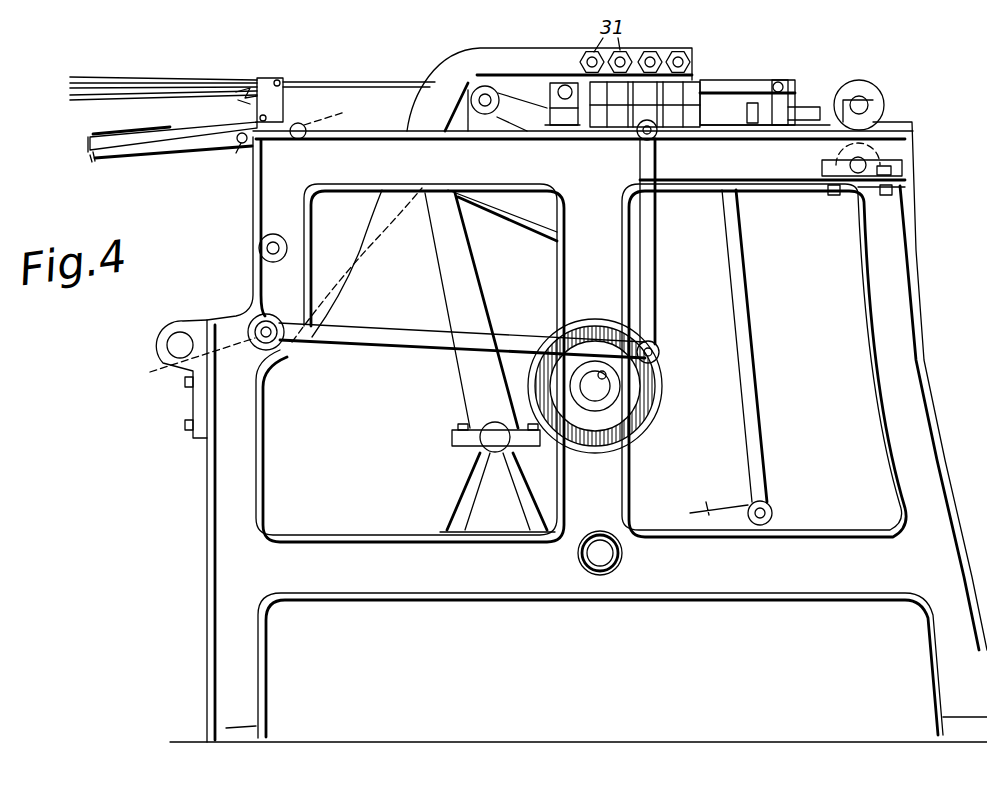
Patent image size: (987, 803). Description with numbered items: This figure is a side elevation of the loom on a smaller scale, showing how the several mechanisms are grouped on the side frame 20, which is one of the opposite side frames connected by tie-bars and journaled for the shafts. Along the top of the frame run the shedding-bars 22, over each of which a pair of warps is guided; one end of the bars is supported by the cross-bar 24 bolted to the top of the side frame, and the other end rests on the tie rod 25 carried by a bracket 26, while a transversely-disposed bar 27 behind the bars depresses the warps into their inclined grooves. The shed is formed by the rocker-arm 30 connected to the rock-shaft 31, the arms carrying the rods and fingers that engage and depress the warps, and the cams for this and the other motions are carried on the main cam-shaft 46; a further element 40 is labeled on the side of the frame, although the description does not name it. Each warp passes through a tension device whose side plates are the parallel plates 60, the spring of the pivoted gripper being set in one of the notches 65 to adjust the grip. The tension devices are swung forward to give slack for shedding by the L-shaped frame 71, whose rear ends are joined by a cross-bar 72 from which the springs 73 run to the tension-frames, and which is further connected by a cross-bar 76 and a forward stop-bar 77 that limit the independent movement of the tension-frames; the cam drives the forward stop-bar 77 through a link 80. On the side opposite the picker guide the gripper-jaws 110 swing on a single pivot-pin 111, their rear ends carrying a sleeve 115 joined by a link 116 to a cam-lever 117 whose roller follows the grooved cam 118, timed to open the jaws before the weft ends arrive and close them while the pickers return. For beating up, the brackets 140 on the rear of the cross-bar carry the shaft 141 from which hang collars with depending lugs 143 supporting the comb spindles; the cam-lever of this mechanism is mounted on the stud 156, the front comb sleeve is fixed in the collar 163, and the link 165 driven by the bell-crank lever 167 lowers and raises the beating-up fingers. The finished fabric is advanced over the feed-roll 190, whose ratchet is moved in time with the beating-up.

The side frame 20 is at (578, 395).
The shedding-bar 22 is at (745, 80).
The cross-bar 24 is at (563, 136).
The tie rod 25 is at (783, 84).
The bracket 26 is at (778, 84).
The transversely-disposed bar 27 is at (548, 88).
The rocker-arm 30 is at (372, 270).
The rock-shaft 31 is at (168, 357).
The wheel 40 is at (600, 390).
The main cam-shaft 46 is at (590, 553).
The parallel plate 60 is at (285, 100).
The notch 65 is at (246, 86).
The L-shaped frame 71 is at (192, 149).
The cross-bar 72 is at (89, 152).
The spring 73 is at (114, 137).
The cross-bar 76 is at (239, 146).
The forward stop-bar 77 is at (321, 125).
The link 80 is at (509, 229).
The gripper-jaw 110 is at (662, 136).
The pivot-pin 111 is at (615, 110).
The sleeve 115 is at (637, 140).
The link 116 is at (657, 230).
The cam-lever 117 is at (398, 347).
The grooved cam 118 is at (656, 413).
The bracket 140 is at (507, 110).
The shaft 141 is at (480, 92).
The depending lug 143 is at (478, 118).
The stud 156 is at (488, 443).
The collar 163 is at (747, 110).
The link 165 is at (752, 337).
The bell-crank lever 167 is at (660, 494).
The feed-roll 190 is at (832, 160).